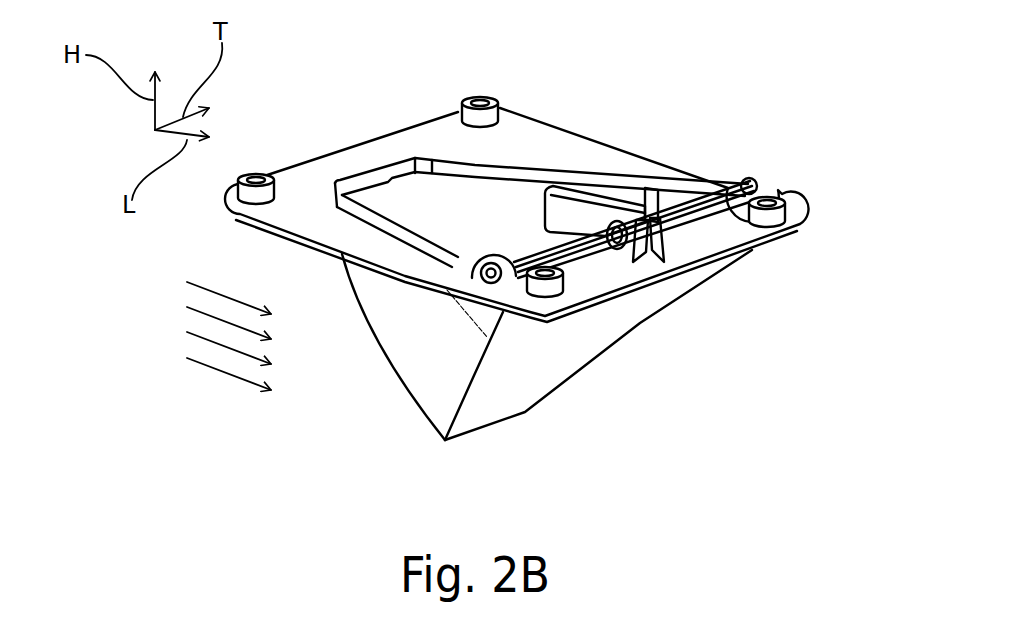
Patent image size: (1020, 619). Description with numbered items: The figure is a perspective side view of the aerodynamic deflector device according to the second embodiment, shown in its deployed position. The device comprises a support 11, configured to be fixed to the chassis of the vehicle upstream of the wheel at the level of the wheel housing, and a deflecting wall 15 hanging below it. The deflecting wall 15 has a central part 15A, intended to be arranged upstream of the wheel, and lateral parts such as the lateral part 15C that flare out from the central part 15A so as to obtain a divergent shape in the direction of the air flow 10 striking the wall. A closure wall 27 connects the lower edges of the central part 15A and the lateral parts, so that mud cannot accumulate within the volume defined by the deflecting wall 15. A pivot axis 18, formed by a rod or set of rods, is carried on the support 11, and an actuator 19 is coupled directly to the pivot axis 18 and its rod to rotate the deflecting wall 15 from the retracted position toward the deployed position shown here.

The air flow 10 is at (227, 375).
The support 11 is at (520, 110).
The deflecting wall 15 is at (498, 369).
The central part 15A is at (349, 296).
The lateral part 15C is at (437, 393).
The closure wall 27 is at (573, 350).
The pivot axis 18 is at (720, 197).
The actuator 19 is at (591, 198).